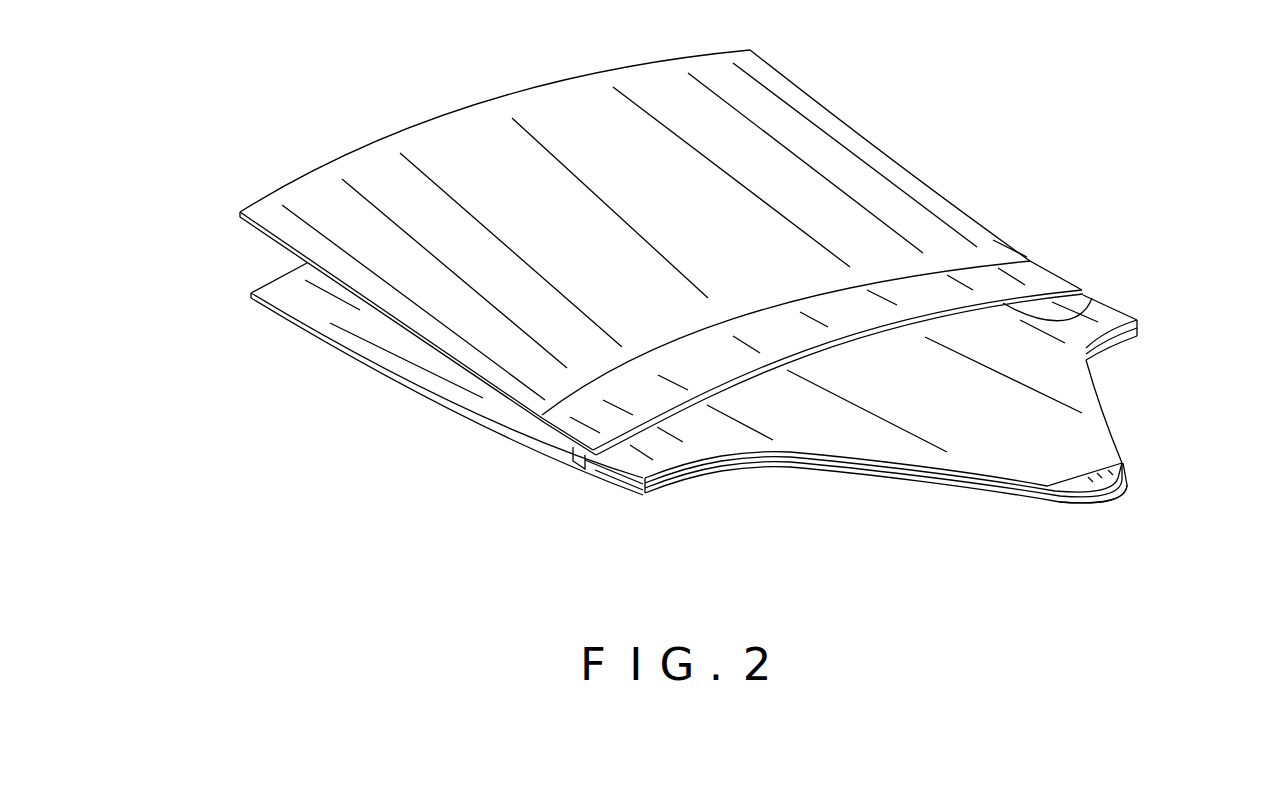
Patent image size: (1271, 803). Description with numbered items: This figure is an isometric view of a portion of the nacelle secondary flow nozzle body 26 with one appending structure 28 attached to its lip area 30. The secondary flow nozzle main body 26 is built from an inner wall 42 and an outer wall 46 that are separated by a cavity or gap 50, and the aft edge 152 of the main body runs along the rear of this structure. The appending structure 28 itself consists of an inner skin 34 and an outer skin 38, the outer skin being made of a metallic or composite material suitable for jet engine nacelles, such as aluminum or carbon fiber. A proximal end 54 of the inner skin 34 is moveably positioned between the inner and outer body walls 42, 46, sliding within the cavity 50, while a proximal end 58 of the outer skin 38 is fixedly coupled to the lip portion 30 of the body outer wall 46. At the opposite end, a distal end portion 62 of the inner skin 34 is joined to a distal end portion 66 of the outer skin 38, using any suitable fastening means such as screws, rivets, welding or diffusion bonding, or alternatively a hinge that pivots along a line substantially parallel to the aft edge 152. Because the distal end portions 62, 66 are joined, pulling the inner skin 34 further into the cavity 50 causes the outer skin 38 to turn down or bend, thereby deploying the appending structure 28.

The nacelle secondary flow nozzle body 26 is at (835, 77).
The appending structure 28 is at (676, 386).
The lip area 30 is at (812, 322).
The inner skin 34 is at (740, 472).
The outer skin 38 is at (692, 468).
The inner wall 42 is at (281, 316).
The outer wall 46 is at (262, 231).
The cavity 50 is at (318, 302).
The proximal end of inner skin 54 is at (575, 463).
The proximal end of outer skin 58 is at (573, 446).
The distal end portion of inner skin 62 is at (1082, 505).
The distal end portion of outer skin 66 is at (1123, 463).
The aft edge 152 is at (1092, 298).